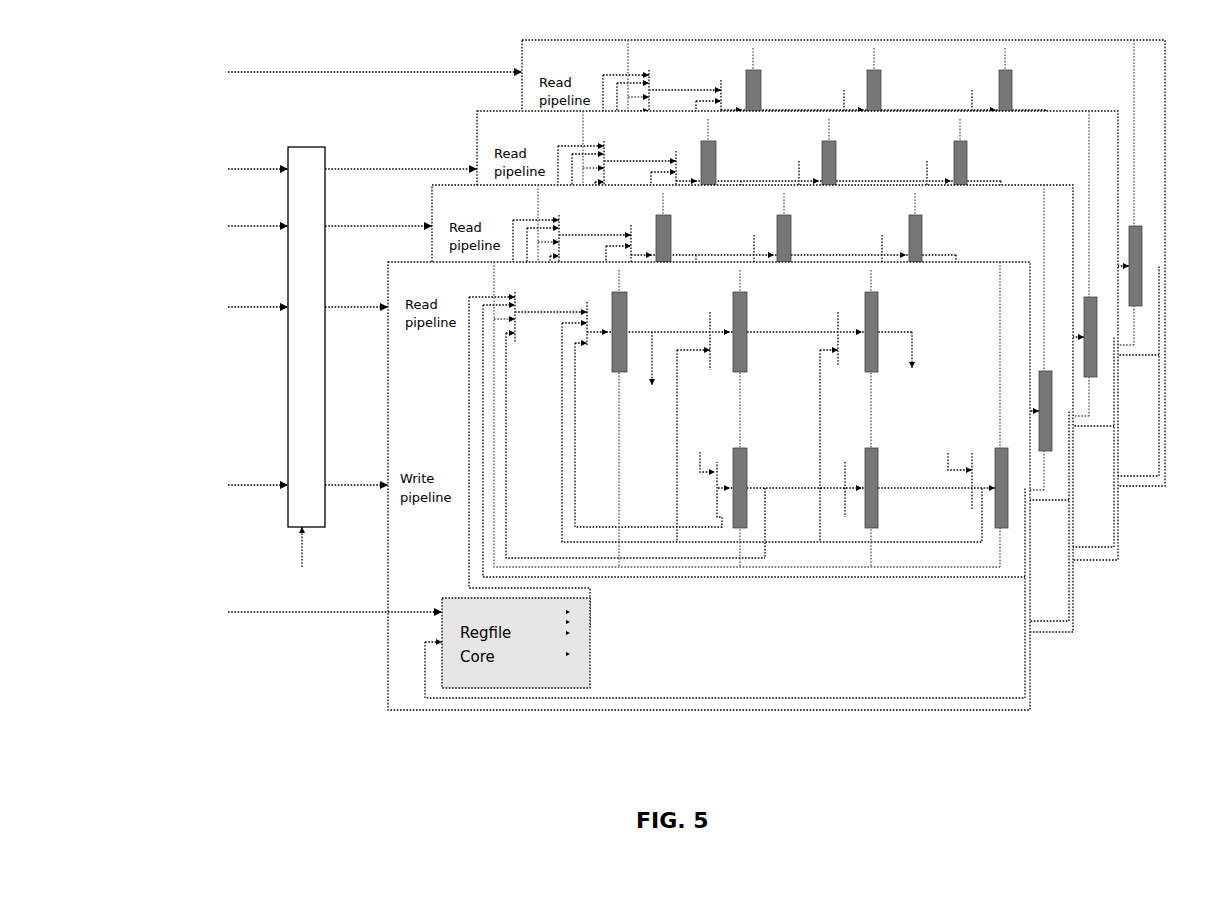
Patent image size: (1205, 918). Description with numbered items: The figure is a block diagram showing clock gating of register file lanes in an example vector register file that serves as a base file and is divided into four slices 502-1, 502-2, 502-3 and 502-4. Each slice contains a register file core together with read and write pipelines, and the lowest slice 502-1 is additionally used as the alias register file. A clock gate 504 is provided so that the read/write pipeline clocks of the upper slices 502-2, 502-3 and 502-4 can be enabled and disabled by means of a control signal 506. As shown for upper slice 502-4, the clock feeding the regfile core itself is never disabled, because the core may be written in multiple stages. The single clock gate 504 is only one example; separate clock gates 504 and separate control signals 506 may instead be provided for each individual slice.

The slice 502-1 is at (851, 281).
The slice 502-2 is at (805, 354).
The slice 502-3 is at (763, 426).
The slice 502-4 is at (709, 504).
The clock gate 504 is at (286, 372).
The control signal 506 is at (280, 547).